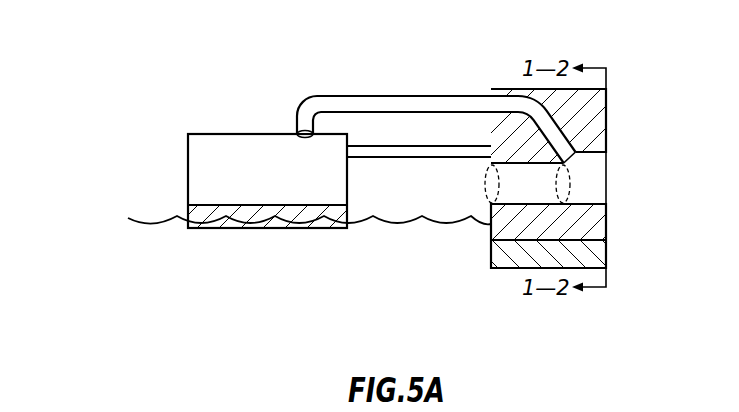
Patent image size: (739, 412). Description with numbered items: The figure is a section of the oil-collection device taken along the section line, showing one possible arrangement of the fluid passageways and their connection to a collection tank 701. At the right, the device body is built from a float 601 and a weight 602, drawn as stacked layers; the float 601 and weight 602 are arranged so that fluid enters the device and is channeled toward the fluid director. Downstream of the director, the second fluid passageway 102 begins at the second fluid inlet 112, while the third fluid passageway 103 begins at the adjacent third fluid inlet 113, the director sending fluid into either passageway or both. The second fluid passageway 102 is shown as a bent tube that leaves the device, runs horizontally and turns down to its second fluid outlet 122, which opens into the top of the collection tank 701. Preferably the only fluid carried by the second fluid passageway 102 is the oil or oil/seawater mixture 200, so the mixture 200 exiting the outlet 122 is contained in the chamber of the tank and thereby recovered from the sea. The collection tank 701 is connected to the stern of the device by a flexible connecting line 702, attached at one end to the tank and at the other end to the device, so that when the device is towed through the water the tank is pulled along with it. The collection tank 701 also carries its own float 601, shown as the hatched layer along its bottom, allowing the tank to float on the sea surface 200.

The collection tank 701 is at (262, 155).
The second fluid outlet 122 is at (299, 130).
The connecting line 702 is at (414, 147).
The second fluid passageway 102 is at (476, 95).
The float 601 is at (217, 230).
The second fluid inlet 112 is at (573, 162).
The third fluid inlet 113 is at (565, 185).
The third fluid passageway 103 is at (520, 181).
The oil or oil/seawater mixture 200 is at (143, 222).
The weight 602 is at (505, 257).